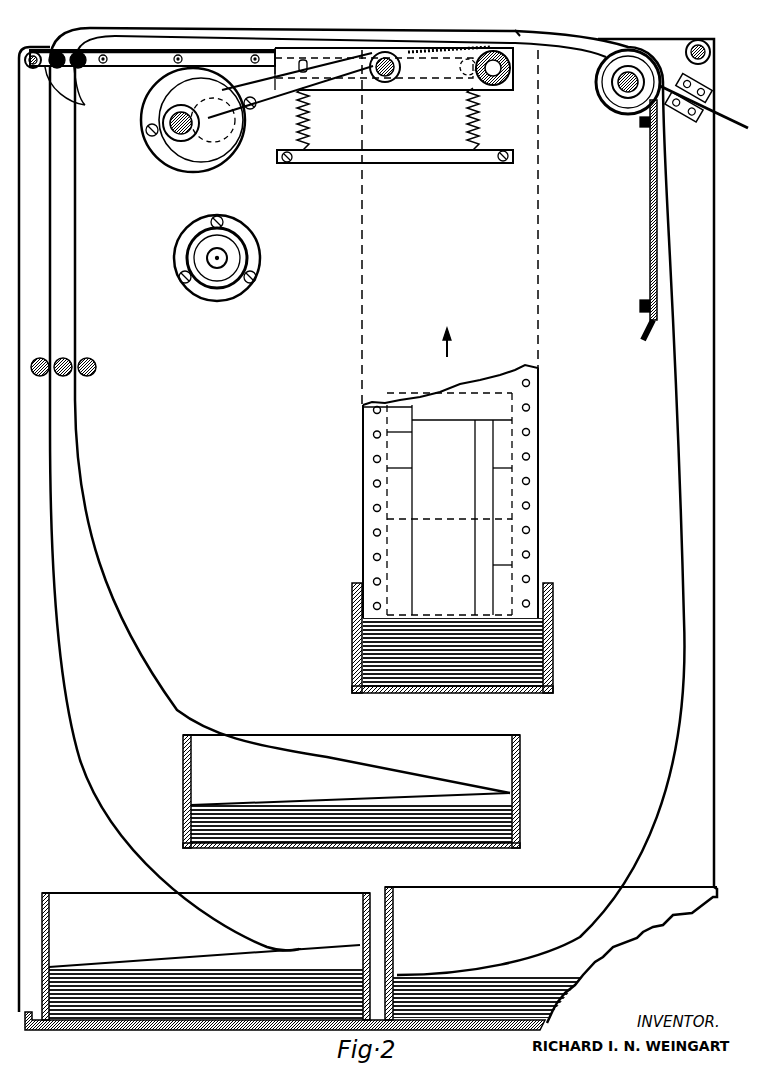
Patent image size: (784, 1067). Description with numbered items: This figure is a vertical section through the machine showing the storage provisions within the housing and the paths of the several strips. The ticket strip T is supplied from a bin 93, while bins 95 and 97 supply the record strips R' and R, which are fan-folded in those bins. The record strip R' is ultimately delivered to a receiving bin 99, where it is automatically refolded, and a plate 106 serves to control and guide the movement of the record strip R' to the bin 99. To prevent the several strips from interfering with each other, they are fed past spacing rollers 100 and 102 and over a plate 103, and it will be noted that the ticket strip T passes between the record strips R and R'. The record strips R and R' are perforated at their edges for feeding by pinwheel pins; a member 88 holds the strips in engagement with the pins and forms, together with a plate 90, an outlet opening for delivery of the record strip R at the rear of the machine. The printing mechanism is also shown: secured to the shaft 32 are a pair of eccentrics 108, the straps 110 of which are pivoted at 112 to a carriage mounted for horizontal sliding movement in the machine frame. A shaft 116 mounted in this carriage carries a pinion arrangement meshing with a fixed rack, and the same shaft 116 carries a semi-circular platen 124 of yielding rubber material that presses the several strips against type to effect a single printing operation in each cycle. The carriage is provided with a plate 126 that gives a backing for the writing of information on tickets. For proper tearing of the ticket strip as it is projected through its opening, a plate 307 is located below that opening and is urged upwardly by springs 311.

The shaft 32 is at (168, 137).
The member 88 is at (667, 78).
The plate 90 is at (700, 118).
The bin 93 is at (553, 620).
The bin 95 is at (522, 748).
The bin 97 is at (367, 892).
The receiving bin 99 is at (533, 887).
The spacing roller 100 is at (85, 360).
The spacing roller 102 is at (97, 105).
The plate 103 is at (130, 62).
The plate 106 is at (650, 220).
The eccentrics 108 is at (228, 147).
The straps 110 is at (245, 133).
The pivot 112 is at (380, 85).
The shaft 116 is at (520, 35).
The semi-circular platen 124 is at (489, 92).
The plate 126 is at (428, 45).
The plate 307 is at (422, 93).
The springs 311 is at (308, 126).
The record strip R is at (399, 509).
The record strip R' is at (292, 430).
The ticket strip T is at (539, 440).